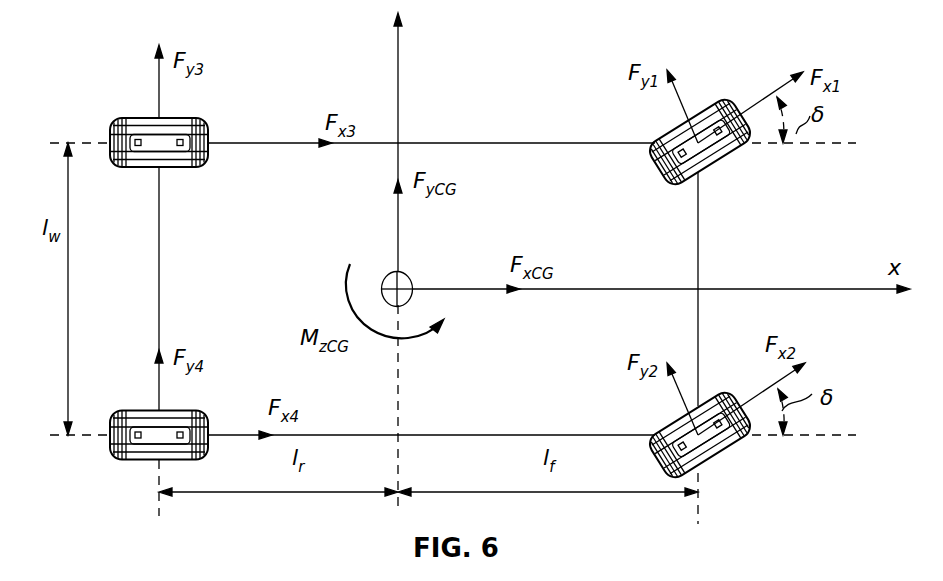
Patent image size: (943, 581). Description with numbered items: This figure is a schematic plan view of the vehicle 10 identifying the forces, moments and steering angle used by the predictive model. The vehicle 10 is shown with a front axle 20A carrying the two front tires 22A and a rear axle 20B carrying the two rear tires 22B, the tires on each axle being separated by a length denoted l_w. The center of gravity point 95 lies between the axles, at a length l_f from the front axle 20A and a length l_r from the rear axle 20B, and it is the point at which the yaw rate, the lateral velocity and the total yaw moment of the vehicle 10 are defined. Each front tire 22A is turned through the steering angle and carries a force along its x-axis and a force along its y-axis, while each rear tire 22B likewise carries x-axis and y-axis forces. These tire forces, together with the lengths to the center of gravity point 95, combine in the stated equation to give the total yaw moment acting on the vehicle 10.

The vehicle 10 is at (814, 31).
The front axle 20A is at (699, 253).
The rear axle 20B is at (160, 270).
The front tires 22A is at (735, 148).
The rear tires 22B is at (137, 168).
The center of gravity point 95 is at (410, 279).